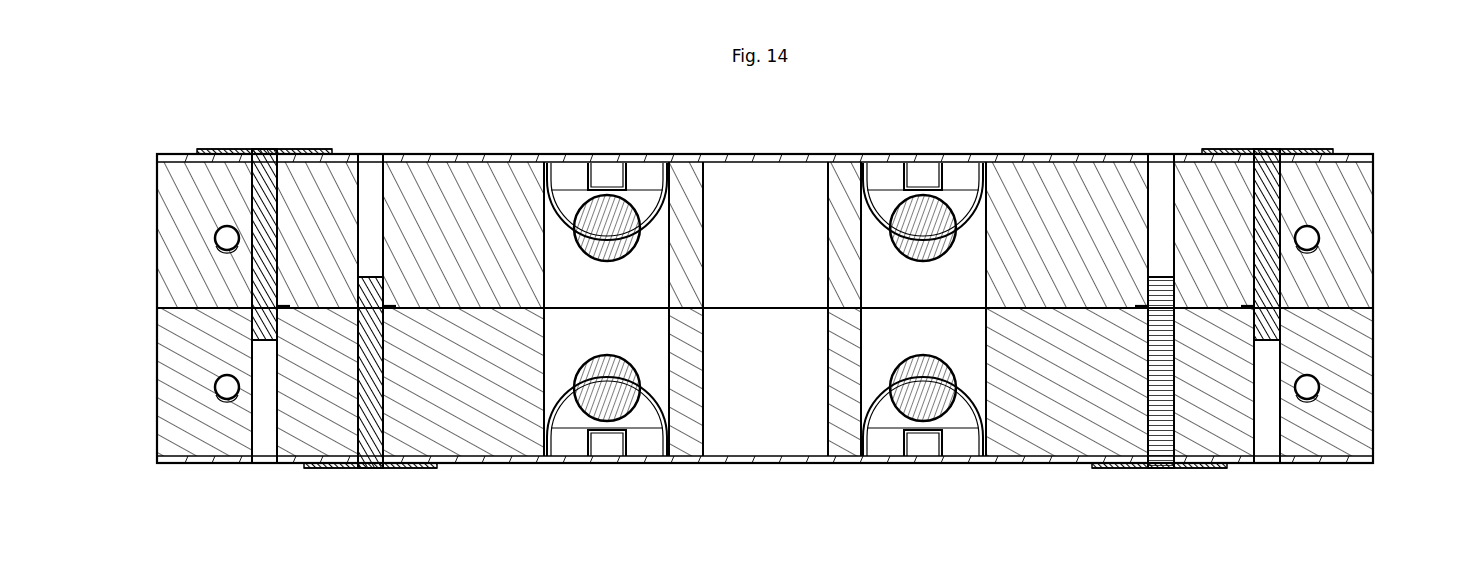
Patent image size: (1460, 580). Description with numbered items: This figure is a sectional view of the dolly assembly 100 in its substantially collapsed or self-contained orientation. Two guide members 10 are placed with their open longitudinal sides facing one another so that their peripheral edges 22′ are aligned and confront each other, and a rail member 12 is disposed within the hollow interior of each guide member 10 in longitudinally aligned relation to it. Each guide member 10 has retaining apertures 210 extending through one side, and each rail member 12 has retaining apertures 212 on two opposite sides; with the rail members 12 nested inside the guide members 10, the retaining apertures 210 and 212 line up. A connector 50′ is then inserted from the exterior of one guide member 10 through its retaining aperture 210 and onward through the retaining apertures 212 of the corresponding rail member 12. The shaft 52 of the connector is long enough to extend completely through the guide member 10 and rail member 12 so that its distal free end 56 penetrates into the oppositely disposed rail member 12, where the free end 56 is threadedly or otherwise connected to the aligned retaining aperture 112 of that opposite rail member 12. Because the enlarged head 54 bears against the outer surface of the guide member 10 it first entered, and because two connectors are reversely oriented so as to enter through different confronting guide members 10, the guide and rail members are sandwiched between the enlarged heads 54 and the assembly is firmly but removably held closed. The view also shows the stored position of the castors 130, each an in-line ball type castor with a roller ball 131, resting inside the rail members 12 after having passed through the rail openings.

The dolly assembly 100 is at (606, 122).
The guide member 10 is at (1025, 160).
The rail member 12 is at (1357, 278).
The retaining aperture 210 is at (278, 157).
The retaining aperture 212 is at (282, 308).
The shaft 52 is at (268, 162).
The head portion 54 is at (213, 156).
The free end 56 is at (370, 277).
The connector member 50′ is at (215, 150).
The retaining aperture 112 is at (216, 240).
The castor 130 is at (564, 228).
The roller ball 131 is at (615, 240).
The peripheral edge 22′ is at (729, 308).